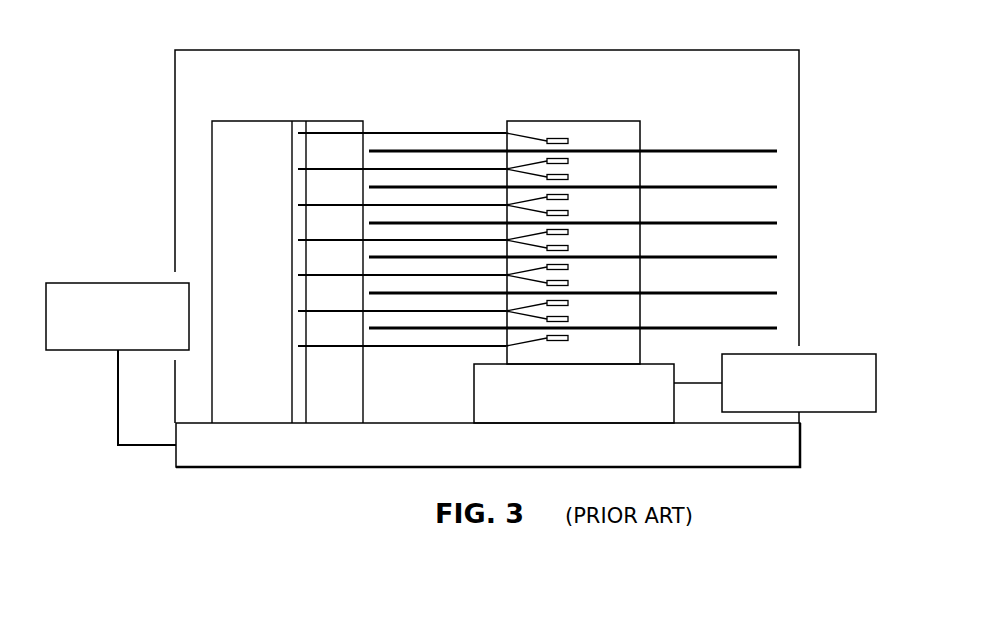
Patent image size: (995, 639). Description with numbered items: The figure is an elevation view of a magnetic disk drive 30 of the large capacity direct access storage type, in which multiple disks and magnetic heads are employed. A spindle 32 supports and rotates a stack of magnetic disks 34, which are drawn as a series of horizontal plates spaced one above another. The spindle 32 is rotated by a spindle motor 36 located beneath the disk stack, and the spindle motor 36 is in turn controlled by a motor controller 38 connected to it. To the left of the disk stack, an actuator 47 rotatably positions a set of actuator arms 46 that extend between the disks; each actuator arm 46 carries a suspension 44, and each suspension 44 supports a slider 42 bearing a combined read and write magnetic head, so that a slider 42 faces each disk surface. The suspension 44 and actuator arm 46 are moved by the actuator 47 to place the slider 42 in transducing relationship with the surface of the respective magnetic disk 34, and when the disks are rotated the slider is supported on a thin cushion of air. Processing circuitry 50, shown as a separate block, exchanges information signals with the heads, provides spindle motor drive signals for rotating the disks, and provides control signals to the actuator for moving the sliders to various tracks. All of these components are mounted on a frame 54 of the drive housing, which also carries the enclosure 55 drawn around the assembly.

The magnetic disk drive 30 is at (694, 119).
The spindle 32 is at (628, 120).
The magnetic disk 34 is at (777, 152).
The spindle motor 36 is at (588, 406).
The motor controller 38 is at (833, 413).
The slider 42 is at (571, 162).
The suspension 44 is at (541, 168).
The actuator arm 46 is at (477, 169).
The actuator 47 is at (242, 120).
The processing circuitry 50 is at (90, 282).
The frame 54 is at (228, 462).
The housing 55 is at (483, 50).